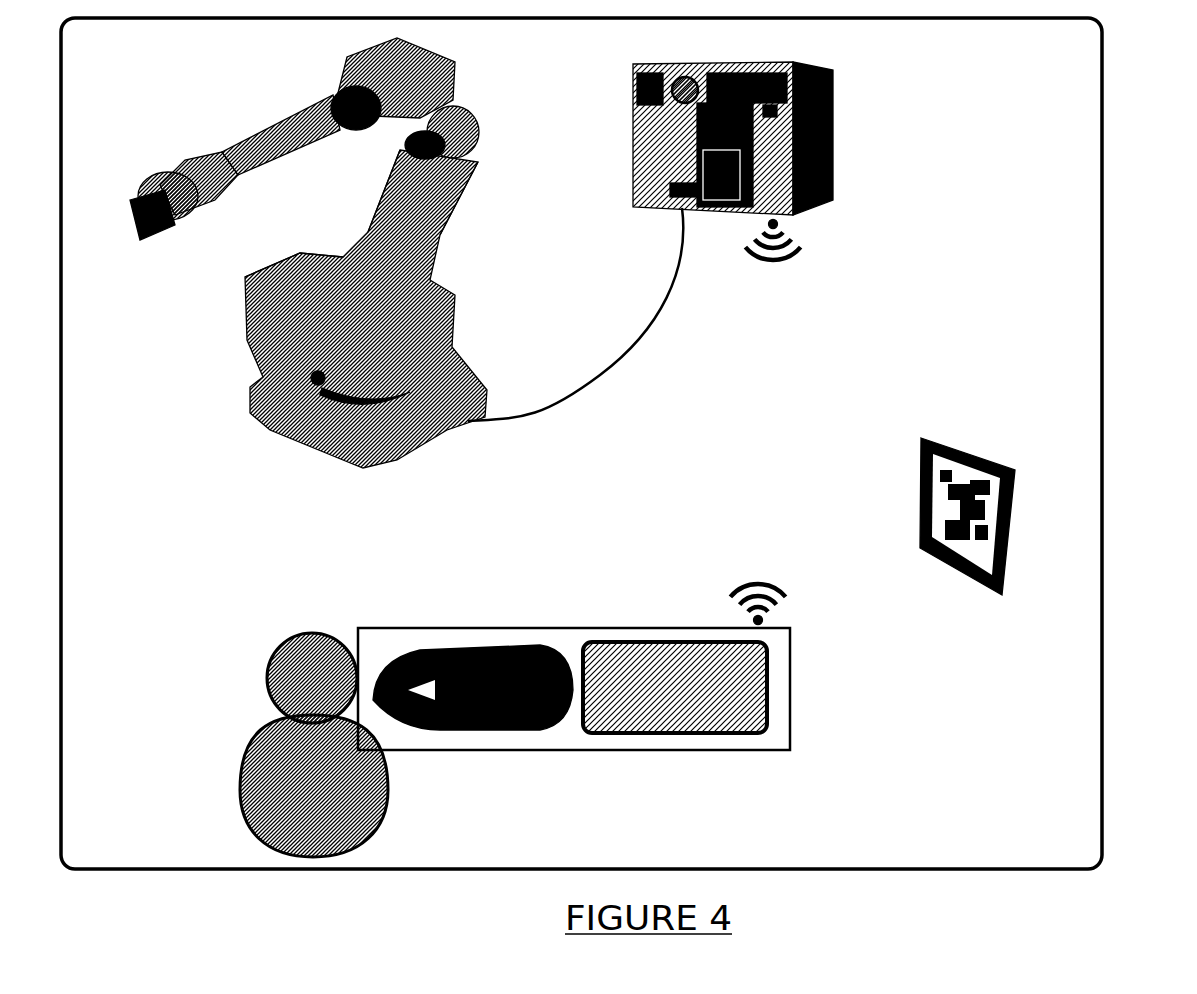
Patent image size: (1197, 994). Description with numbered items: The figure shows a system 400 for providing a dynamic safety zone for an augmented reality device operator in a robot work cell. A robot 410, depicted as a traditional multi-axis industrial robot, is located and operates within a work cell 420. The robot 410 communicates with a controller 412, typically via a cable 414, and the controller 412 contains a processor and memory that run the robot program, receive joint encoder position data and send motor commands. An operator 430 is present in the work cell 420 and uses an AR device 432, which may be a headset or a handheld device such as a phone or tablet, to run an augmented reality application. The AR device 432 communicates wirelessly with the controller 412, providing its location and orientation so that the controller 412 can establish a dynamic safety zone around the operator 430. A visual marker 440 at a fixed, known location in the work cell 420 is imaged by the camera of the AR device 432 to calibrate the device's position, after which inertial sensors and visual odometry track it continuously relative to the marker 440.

The system 400 is at (1113, 748).
The robot 410 is at (427, 440).
The controller 412 is at (633, 157).
The cable 414 is at (623, 357).
The work cell 420 is at (1102, 105).
The operator 430 is at (390, 797).
The AR device 432 is at (790, 750).
The visual marker 440 is at (990, 592).